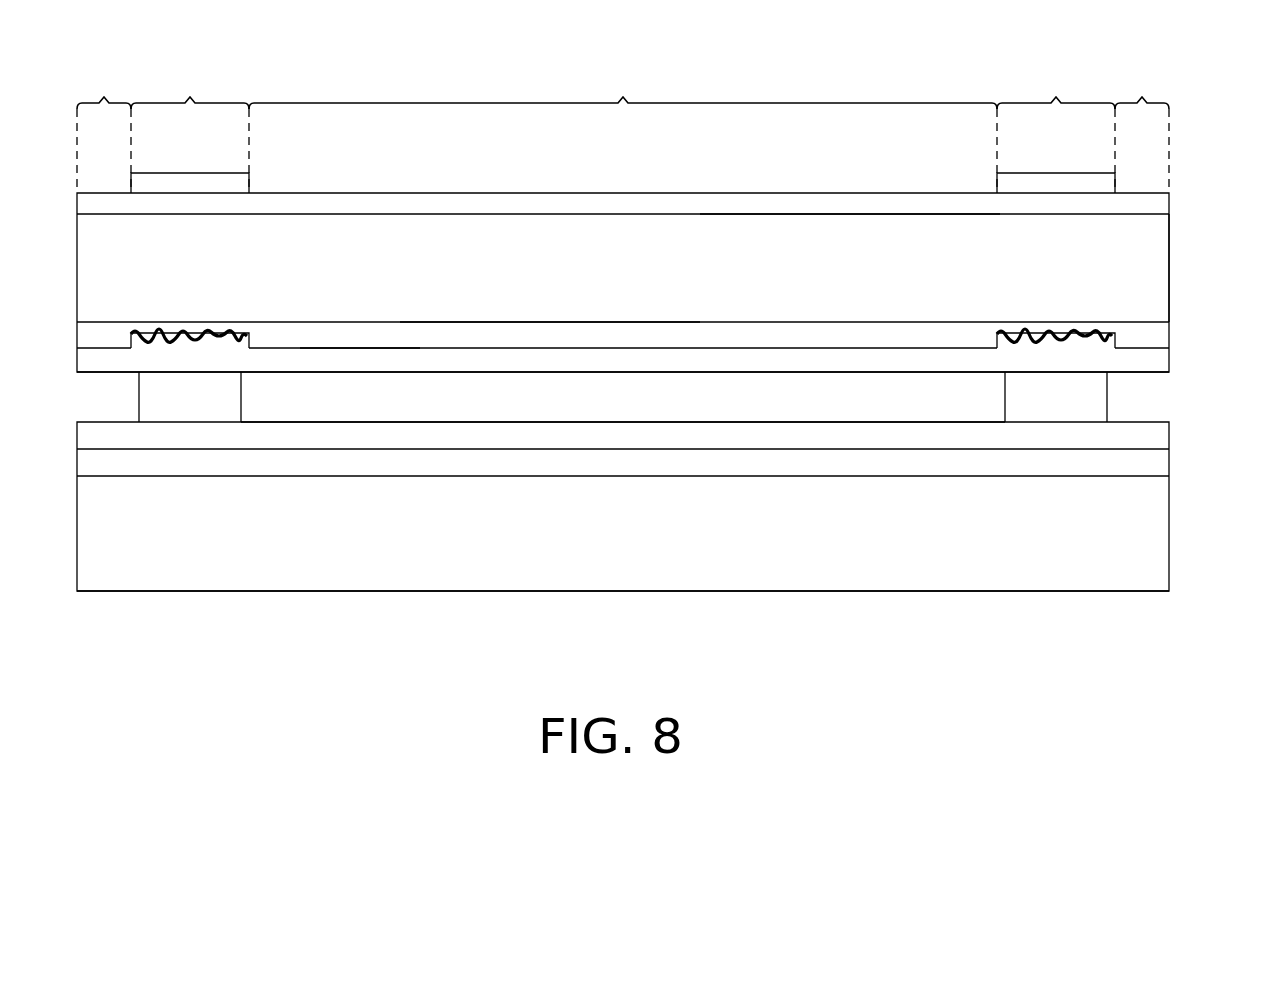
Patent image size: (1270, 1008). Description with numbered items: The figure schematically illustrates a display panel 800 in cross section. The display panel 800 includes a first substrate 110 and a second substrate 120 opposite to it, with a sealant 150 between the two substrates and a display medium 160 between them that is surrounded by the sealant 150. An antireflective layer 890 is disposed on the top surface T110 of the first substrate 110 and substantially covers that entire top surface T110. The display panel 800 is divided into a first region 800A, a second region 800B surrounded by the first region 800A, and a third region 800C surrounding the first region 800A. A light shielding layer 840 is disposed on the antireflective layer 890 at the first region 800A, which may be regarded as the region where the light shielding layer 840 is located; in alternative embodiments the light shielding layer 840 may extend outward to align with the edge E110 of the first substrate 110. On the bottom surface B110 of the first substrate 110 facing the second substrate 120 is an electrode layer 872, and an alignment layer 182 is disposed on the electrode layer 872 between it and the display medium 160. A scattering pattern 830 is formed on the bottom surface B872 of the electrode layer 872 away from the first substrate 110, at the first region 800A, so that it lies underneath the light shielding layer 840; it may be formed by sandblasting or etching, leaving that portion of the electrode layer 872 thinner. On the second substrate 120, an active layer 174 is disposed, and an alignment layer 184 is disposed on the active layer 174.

The display panel 800 is at (1252, 683).
The first region 800A is at (623, 128).
The second region 800B is at (623, 84).
The third region 800C is at (624, 128).
The light shielding layer 840 is at (1049, 185).
The antireflective layer 890 is at (578, 205).
The first substrate 110 is at (773, 228).
The top surface T110 is at (874, 212).
The bottom surface B110 is at (528, 320).
The edge E110 is at (1172, 236).
The scattering pattern 830 is at (1100, 330).
The electrode layer 872 is at (1158, 337).
The bottom surface B872 is at (365, 345).
The alignment layer 182 is at (1163, 359).
The sealant 150 is at (1093, 406).
The alignment layer 184 is at (1150, 437).
The active layer 174 is at (1153, 462).
The second substrate 120 is at (1147, 548).
The display medium 160 is at (930, 405).